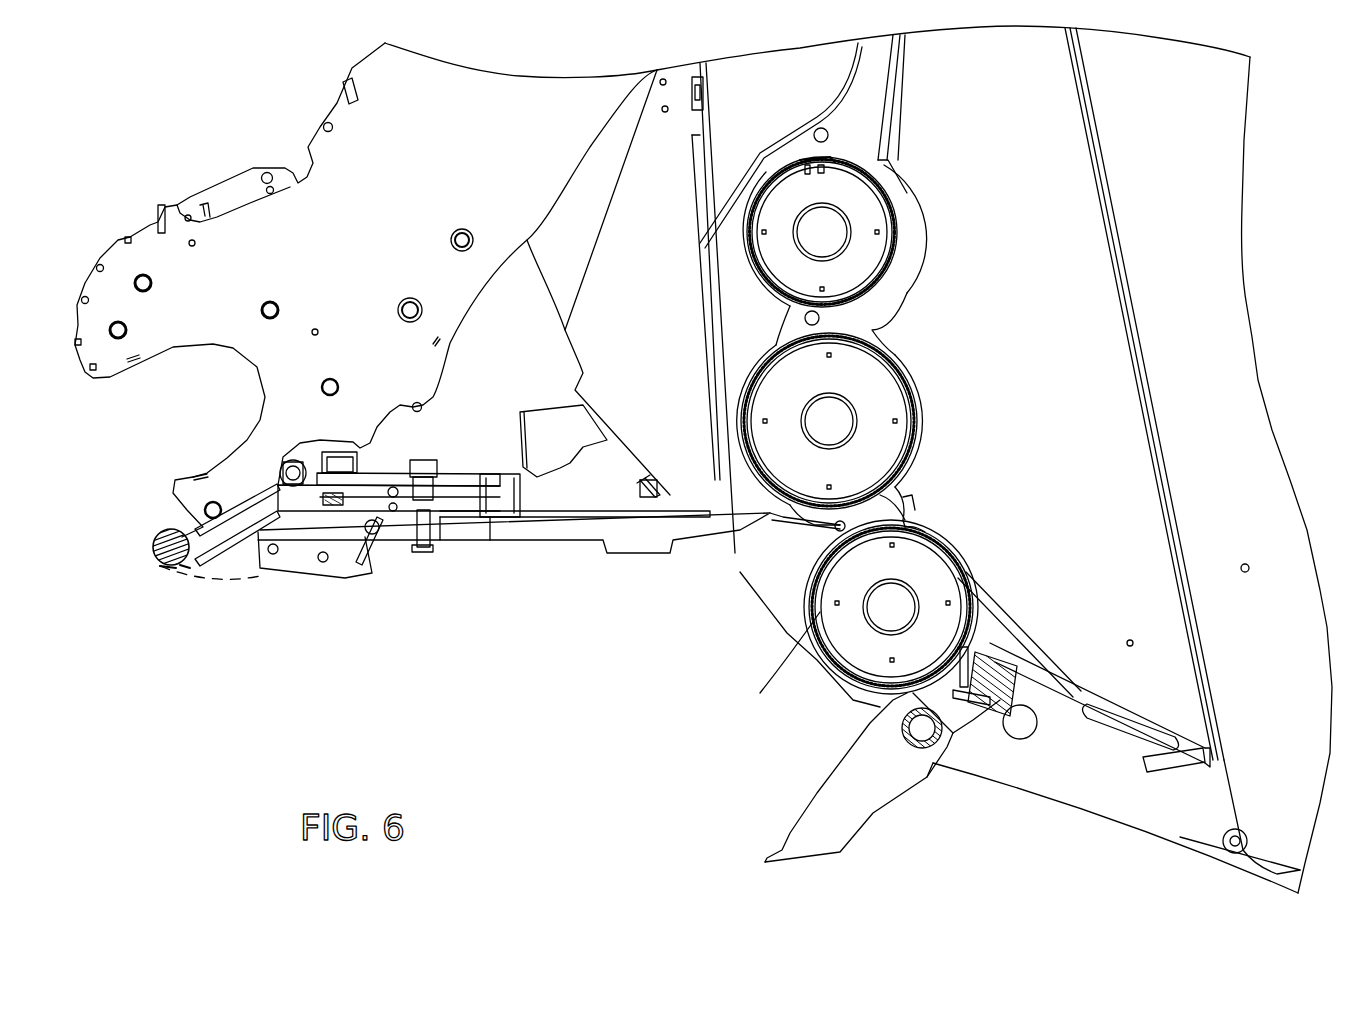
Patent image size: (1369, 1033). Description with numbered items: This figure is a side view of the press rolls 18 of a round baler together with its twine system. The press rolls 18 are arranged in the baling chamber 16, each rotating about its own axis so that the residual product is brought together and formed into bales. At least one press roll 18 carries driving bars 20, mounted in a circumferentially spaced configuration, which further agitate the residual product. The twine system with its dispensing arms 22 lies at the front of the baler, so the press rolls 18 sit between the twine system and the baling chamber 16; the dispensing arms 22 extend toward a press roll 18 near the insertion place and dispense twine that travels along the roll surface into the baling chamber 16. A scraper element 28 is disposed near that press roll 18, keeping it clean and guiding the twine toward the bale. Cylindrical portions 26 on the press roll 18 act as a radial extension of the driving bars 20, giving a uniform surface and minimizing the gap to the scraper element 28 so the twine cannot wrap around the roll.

The baling chamber 16 is at (1222, 432).
The press rolls 18 is at (860, 385).
The driving bar 20 is at (973, 608).
The dispensing arms 22 is at (892, 522).
The cylindrical portions 26 is at (915, 533).
The scraper element 28 is at (973, 648).